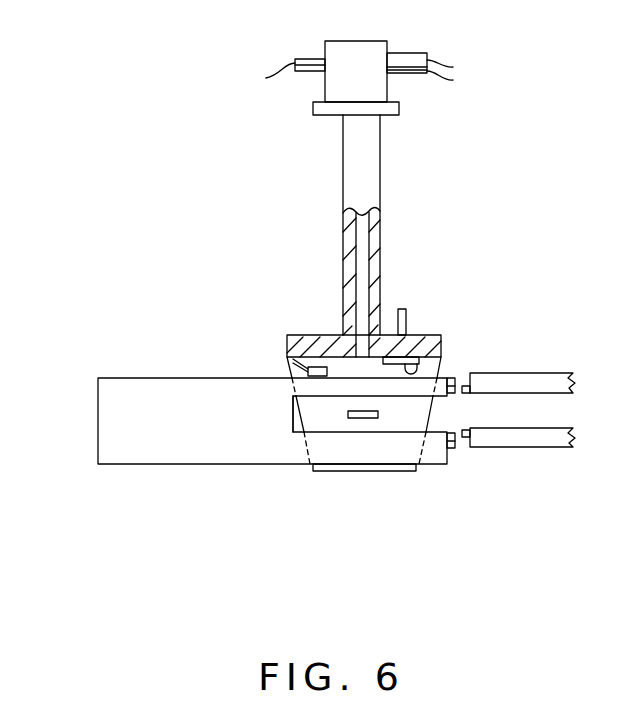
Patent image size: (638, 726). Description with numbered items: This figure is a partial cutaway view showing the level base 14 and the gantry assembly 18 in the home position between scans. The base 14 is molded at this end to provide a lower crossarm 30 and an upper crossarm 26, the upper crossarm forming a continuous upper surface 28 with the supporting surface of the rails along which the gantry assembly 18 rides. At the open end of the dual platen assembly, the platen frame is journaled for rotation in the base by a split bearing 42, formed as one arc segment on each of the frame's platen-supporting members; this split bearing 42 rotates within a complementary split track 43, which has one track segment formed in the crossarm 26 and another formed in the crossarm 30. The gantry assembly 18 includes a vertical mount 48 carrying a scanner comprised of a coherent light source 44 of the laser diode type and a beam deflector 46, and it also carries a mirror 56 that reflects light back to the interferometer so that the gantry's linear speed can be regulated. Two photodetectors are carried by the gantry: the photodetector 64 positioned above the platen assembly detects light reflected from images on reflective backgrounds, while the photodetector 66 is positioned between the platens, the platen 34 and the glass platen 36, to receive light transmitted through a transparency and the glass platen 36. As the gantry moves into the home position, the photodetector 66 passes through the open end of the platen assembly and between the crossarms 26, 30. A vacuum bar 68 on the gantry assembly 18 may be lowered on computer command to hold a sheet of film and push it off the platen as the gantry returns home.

The level base 14 is at (96, 420).
The gantry assembly 18 is at (405, 163).
The upper crossarm 26 is at (438, 380).
The upper surface 28 is at (455, 378).
The lower crossarm 30 is at (421, 470).
The upper arm 34 is at (548, 375).
The glass platen 36 is at (550, 448).
The split bearing 42 is at (470, 432).
The split track 43 is at (456, 378).
The coherent light source 44 is at (311, 58).
The beam deflector 46 is at (402, 56).
The vertical mount 48 is at (346, 156).
The mirror 56 is at (401, 308).
The photodetector 64 is at (432, 343).
The photodetector 66 is at (348, 413).
The vacuum bar 68 is at (290, 367).